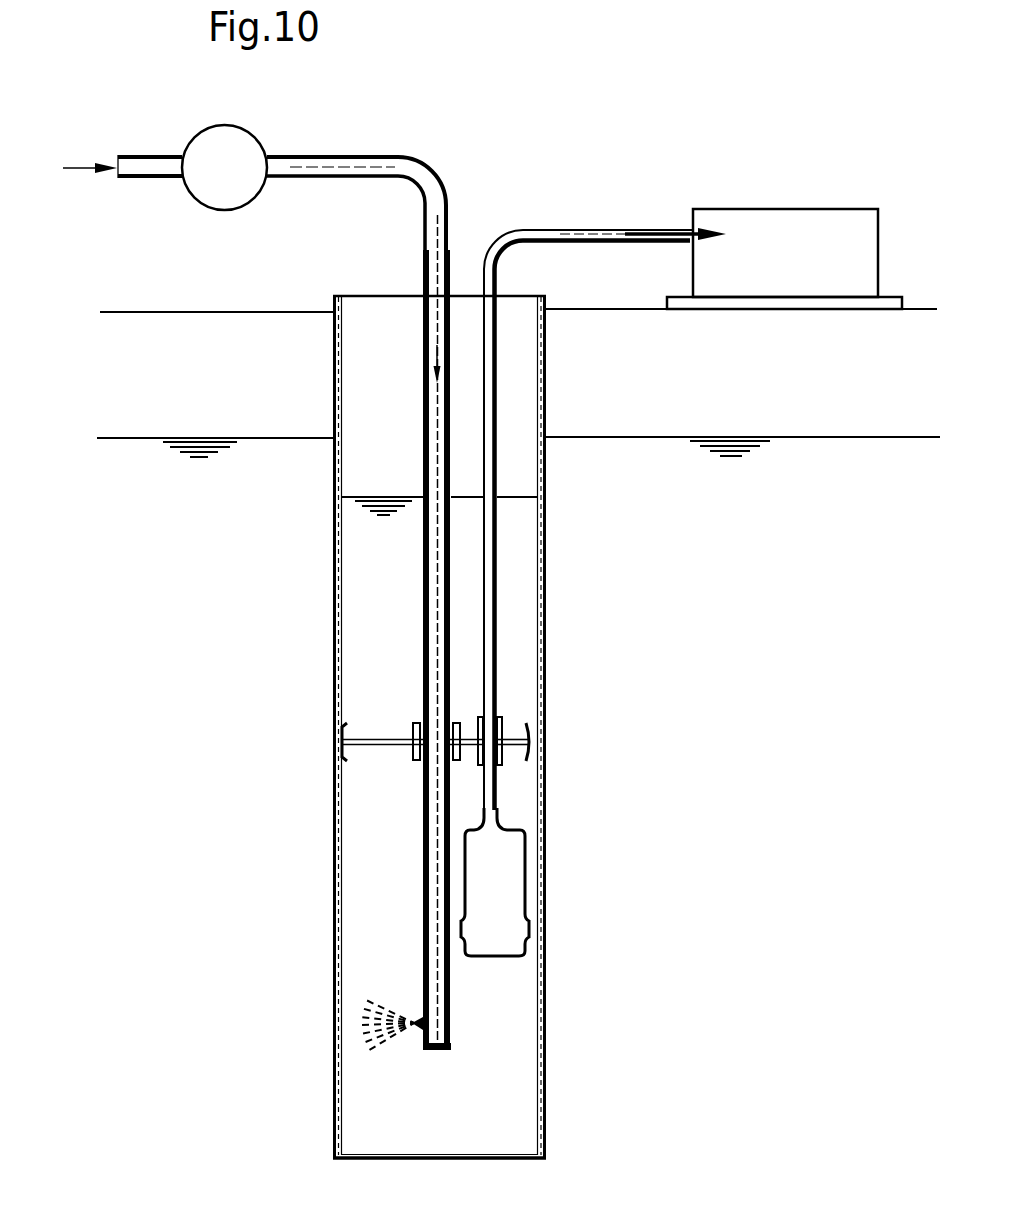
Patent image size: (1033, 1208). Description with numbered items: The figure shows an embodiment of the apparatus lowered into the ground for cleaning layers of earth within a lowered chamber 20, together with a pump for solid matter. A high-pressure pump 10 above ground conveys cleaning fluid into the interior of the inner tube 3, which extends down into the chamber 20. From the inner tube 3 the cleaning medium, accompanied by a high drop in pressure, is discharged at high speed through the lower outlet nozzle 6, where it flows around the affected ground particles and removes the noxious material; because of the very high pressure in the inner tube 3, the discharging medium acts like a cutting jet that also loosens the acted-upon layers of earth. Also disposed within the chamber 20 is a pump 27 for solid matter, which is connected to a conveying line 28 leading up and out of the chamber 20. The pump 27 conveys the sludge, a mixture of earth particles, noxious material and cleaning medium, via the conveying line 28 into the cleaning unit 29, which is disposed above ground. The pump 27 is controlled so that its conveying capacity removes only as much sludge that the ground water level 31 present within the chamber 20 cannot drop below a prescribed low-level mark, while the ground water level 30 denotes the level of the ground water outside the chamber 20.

The high-pressure pump 10 is at (238, 183).
The inner tube 3 is at (423, 413).
The outlet nozzle 6 is at (423, 1032).
The chamber 20 is at (545, 633).
The pump for solid matter 27 is at (507, 888).
The conveying line 28 is at (488, 380).
The cleaning unit 29 is at (795, 270).
The ground water level 30 is at (735, 432).
The ground water level 31 is at (385, 495).